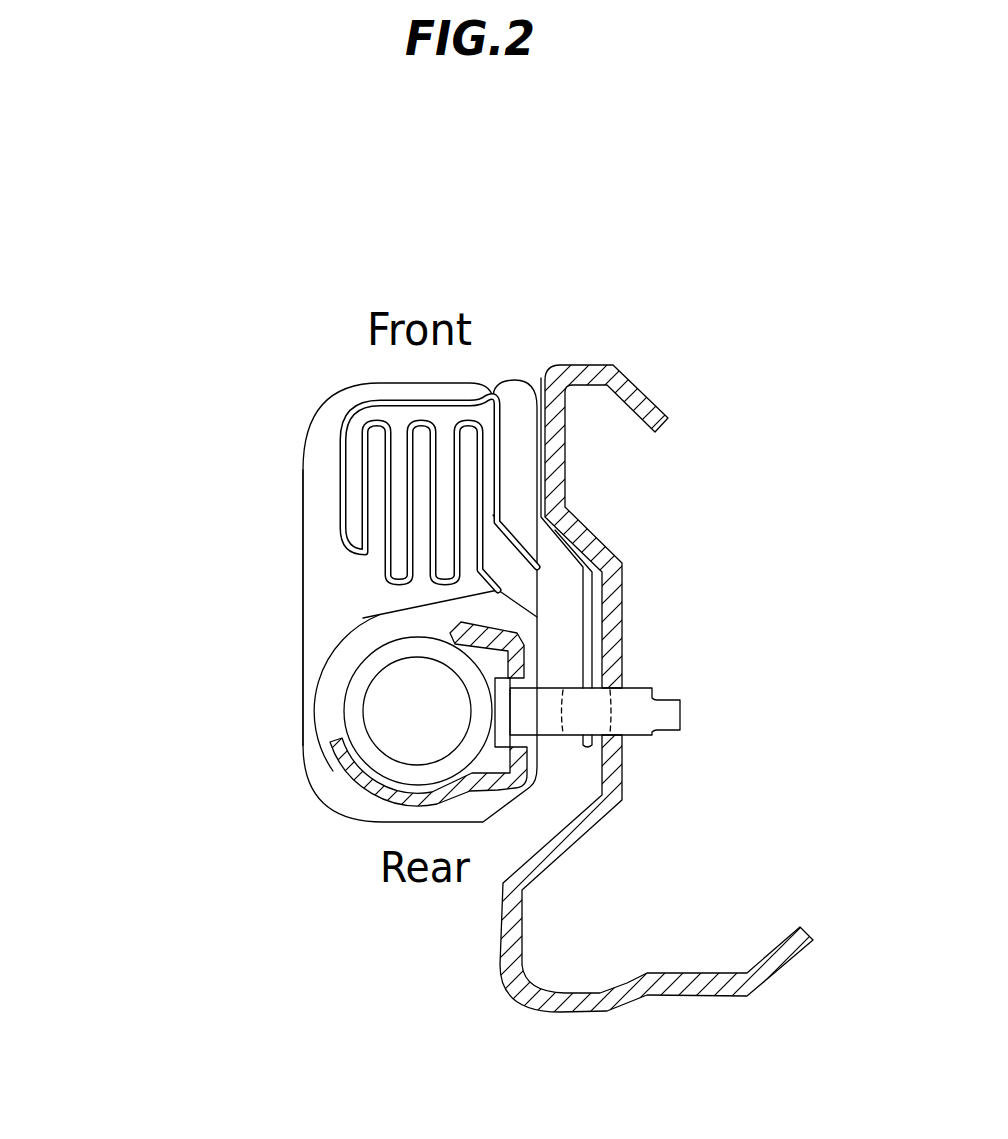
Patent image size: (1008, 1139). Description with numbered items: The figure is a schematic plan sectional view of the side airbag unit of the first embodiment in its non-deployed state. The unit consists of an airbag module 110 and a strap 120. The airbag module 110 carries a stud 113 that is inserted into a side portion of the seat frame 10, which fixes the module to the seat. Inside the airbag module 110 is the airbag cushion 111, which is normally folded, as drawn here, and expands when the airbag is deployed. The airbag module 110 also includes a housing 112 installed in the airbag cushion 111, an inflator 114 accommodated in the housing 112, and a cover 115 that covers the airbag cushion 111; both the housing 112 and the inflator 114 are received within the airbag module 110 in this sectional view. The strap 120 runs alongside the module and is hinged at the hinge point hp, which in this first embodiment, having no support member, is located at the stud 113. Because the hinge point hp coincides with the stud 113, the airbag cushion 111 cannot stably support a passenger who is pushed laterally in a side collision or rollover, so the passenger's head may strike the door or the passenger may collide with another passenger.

The seat frame 10 is at (503, 940).
The airbag module 110 is at (282, 437).
The airbag cushion 111 is at (372, 400).
The housing 112 is at (333, 783).
The stud 113 is at (663, 703).
The inflator 114 is at (344, 690).
The cover 115 is at (303, 538).
The strap 120 is at (508, 383).
The hinge point hp is at (652, 736).